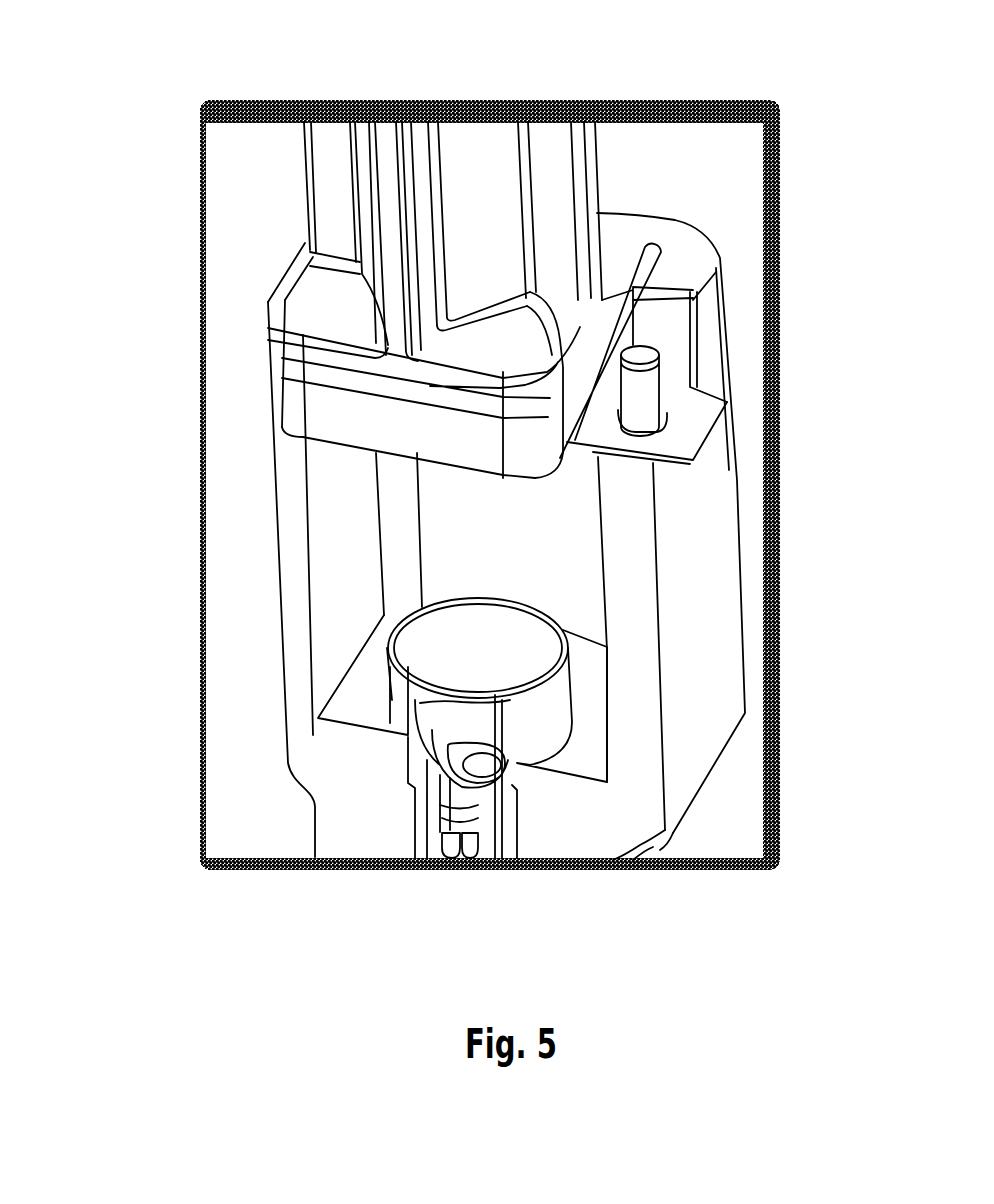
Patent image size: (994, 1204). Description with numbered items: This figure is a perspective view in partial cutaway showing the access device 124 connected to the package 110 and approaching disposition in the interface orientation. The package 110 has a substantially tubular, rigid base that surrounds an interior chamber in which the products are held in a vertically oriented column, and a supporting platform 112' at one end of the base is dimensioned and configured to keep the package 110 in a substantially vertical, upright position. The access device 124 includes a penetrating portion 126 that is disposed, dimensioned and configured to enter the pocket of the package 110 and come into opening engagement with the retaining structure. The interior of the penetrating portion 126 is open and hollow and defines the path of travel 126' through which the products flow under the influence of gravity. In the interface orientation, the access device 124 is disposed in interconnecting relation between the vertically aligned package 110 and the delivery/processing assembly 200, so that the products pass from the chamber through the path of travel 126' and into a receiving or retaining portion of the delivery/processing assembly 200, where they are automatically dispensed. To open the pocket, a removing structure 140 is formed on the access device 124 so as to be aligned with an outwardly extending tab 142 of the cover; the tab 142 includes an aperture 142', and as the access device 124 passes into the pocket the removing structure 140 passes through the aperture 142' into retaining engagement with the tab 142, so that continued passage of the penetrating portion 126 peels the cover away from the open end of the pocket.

The package 110 is at (677, 172).
The supporting platform 112' is at (635, 241).
The access device 124 is at (707, 650).
The penetrating portion 126 is at (462, 653).
The path of travel 126' is at (255, 666).
The removing structure 140 is at (662, 380).
The tab 142 is at (758, 433).
The aperture 142' is at (779, 486).
The delivery/processing assembly 200 is at (491, 850).